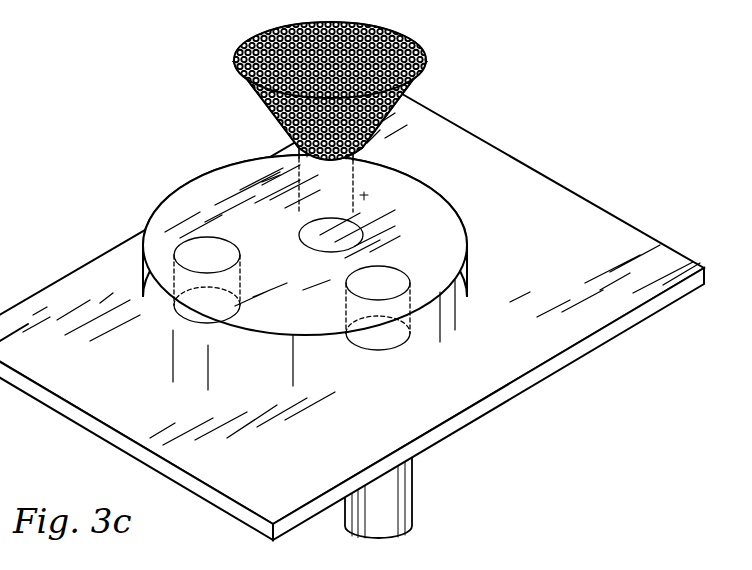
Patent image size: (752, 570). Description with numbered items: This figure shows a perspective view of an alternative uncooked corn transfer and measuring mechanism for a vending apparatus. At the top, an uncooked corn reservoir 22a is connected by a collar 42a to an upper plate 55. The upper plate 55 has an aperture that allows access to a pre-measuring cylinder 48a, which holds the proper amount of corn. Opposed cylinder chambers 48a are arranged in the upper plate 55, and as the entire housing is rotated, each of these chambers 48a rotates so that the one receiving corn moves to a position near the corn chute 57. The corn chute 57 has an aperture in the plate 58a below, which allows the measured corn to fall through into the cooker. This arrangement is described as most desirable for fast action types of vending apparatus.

The uncooked corn reservoir 22a is at (383, 121).
The collar 42a is at (297, 152).
The upper plate 55 is at (440, 240).
The pre-measuring cylinder 48a is at (173, 257).
The plate 58a is at (540, 300).
The corn chute 57 is at (412, 512).